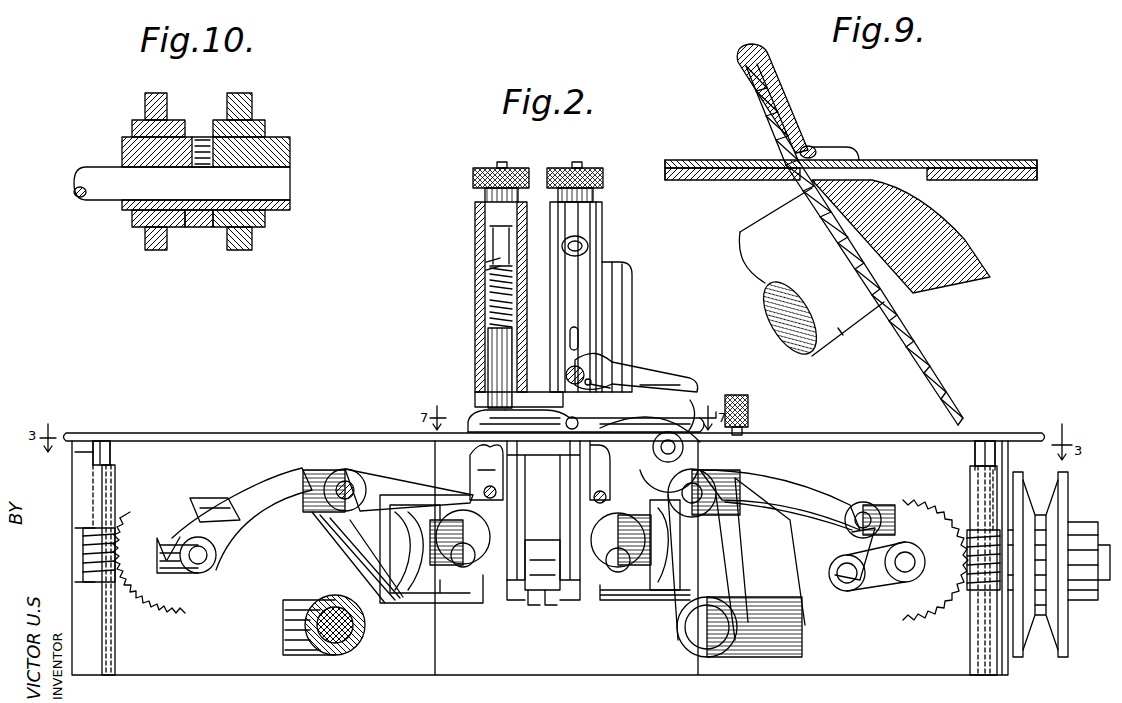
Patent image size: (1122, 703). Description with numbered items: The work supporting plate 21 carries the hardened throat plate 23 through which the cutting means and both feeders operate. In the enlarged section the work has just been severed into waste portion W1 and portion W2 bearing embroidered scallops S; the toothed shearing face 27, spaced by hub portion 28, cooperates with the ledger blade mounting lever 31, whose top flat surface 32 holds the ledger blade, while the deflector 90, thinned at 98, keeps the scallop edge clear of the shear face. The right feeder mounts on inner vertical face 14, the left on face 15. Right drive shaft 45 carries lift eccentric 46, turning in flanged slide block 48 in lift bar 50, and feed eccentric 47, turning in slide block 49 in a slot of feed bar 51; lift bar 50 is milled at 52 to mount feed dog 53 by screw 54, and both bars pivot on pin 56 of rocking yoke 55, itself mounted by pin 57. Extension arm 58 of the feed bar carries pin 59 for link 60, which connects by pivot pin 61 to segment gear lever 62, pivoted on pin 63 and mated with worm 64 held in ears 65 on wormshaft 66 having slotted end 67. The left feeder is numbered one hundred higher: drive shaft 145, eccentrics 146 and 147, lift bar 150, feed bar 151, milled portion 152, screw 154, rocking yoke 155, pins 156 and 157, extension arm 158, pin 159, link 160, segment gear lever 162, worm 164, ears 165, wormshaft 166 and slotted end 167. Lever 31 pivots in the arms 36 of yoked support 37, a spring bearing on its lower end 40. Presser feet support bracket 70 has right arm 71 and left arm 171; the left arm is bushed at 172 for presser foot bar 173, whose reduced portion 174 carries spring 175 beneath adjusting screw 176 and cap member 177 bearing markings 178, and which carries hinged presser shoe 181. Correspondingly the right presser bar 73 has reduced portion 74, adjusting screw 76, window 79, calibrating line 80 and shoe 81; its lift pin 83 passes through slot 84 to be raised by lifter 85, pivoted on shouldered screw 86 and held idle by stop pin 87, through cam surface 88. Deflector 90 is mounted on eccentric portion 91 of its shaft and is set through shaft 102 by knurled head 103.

In FIG. 10, the drive shaft 45 is at (290, 183).
In FIG. 2, the drive shaft 45 is at (600, 598).
In FIG. 10, the eccentric 46 is at (290, 147).
In FIG. 2, the eccentric 46 is at (621, 540).
In FIG. 10, the eccentric 47 is at (122, 152).
In FIG. 2, the eccentric 47 is at (680, 520).
In FIG. 10, the flanged slide block 48 is at (265, 126).
In FIG. 2, the flanged slide block 48 is at (645, 590).
In FIG. 10, the slide block 49 is at (132, 126).
In FIG. 10, the lift bar 50 is at (248, 93).
In FIG. 2, the lift bar 50 is at (664, 597).
In FIG. 10, the feed bar 51 is at (148, 93).
In FIG. 2, the feed bar 51 is at (776, 476).
In FIG. 9, the throat plate 23 is at (718, 181).
In FIG. 9, the waste portion W1 is at (712, 160).
In FIG. 9, the work portion W2 is at (992, 160).
In FIG. 9, the embroidery senser and deflector 90 is at (784, 82).
In FIG. 2, the embroidery senser and deflector 90 is at (650, 420).
In FIG. 9, the thinned portion of deflector 98 is at (806, 146).
In FIG. 9, the scallops S is at (822, 148).
In FIG. 9, the top flat surface 32 is at (812, 204).
In FIG. 9, the shearing face 27 is at (900, 314).
In FIG. 9, the ledger blade mounting lever 31 is at (970, 244).
In FIG. 2, the ledger blade mounting lever 31 is at (542, 546).
In FIG. 9, the hub portion 28 is at (845, 335).
In FIG. 2, the work supporting plate 21 is at (872, 433).
In FIG. 2, the inner vertical face 15 is at (232, 670).
In FIG. 2, the inner vertical face 14 is at (864, 668).
In FIG. 2, the spring tension adjusting screw 176 is at (473, 178).
In FIG. 2, the reduced cross-section portion 174 is at (504, 162).
In FIG. 2, the cylindrical cap member 177 is at (480, 224).
In FIG. 2, the left arm 171 is at (476, 242).
In FIG. 2, the markings 178 is at (485, 262).
In FIG. 2, the tension compression spring 175 is at (490, 292).
In FIG. 2, the bushing 172 is at (488, 370).
In FIG. 2, the presser foot bar 173 is at (475, 398).
In FIG. 2, the hinged presser shoe 181 is at (470, 420).
In FIG. 2, the right presser bar 73 is at (586, 420).
In FIG. 2, the spring tension adjusting screw 76 is at (603, 178).
In FIG. 2, the reduced cross-section portion 74 is at (580, 162).
In FIG. 2, the presser feet support bracket 70 is at (602, 312).
In FIG. 2, the window 79 is at (582, 240).
In FIG. 2, the calibrating line 80 is at (588, 246).
In FIG. 2, the right arm 71 is at (596, 272).
In FIG. 2, the vertical slot 84 is at (578, 335).
In FIG. 2, the shouldered screw 86 is at (618, 370).
In FIG. 2, the presser bar lifter 85 is at (680, 378).
In FIG. 2, the lift pin 83 is at (590, 372).
In FIG. 2, the cam surface 88 is at (635, 364).
In FIG. 2, the stop pin 87 is at (640, 384).
In FIG. 2, the right shoe 81 is at (600, 430).
In FIG. 2, the eccentric portion 91 is at (690, 404).
In FIG. 2, the knurled head 103 is at (745, 391).
In FIG. 2, the shaft 102 is at (748, 430).
In FIG. 2, the slotted end 167 is at (102, 441).
In FIG. 2, the wormshaft 166 is at (110, 458).
In FIG. 2, the ears 165 is at (115, 494).
In FIG. 2, the worm 164 is at (112, 550).
In FIG. 2, the segment gear lever 162 is at (178, 580).
In FIG. 2, the pin 159 is at (205, 563).
In FIG. 2, the extension arm 158 is at (250, 530).
In FIG. 2, the link 160 is at (228, 500).
In FIG. 2, the pin 156 is at (350, 480).
In FIG. 2, the feed bar 151 is at (305, 470).
In FIG. 2, the lift bar 150 is at (398, 482).
In FIG. 2, the rocking yoke 155 is at (286, 645).
In FIG. 2, the pin 157 is at (365, 635).
In FIG. 2, the eccentric 147 is at (392, 520).
In FIG. 2, the eccentric 146 is at (460, 537).
In FIG. 2, the drive shaft 145 is at (465, 567).
In FIG. 2, the milled portion 152 is at (472, 480).
In FIG. 2, the screw 154 is at (490, 498).
In FIG. 2, the feed dog 53 is at (570, 455).
In FIG. 2, the arms 36 is at (520, 583).
In FIG. 2, the lower end 40 is at (530, 598).
In FIG. 2, the yoked support 37 is at (552, 598).
In FIG. 2, the milled portion 52 is at (606, 452).
In FIG. 2, the screw 54 is at (606, 494).
In FIG. 2, the pin 56 is at (698, 485).
In FIG. 2, the pin 57 is at (696, 635).
In FIG. 2, the extension arm 58 is at (815, 497).
In FIG. 2, the pin 59 is at (866, 508).
In FIG. 2, the link 60 is at (855, 552).
In FIG. 2, the pivot pin 61 is at (848, 586).
In FIG. 2, the pin 63 is at (913, 555).
In FIG. 2, the segment gear lever 62 is at (925, 590).
In FIG. 2, the rocking yoke 55 is at (803, 626).
In FIG. 2, the slotted end 67 is at (986, 441).
In FIG. 2, the wormshaft 66 is at (975, 462).
In FIG. 2, the ears 65 is at (975, 490).
In FIG. 2, the worm 64 is at (970, 568).